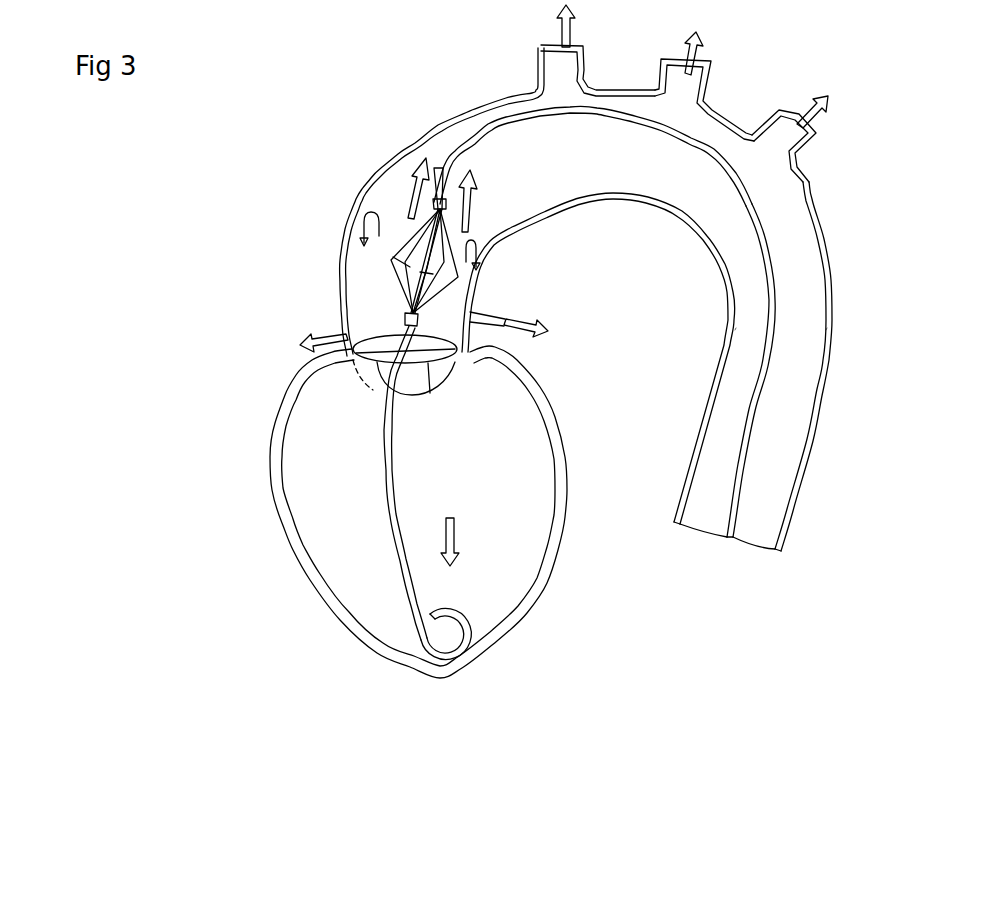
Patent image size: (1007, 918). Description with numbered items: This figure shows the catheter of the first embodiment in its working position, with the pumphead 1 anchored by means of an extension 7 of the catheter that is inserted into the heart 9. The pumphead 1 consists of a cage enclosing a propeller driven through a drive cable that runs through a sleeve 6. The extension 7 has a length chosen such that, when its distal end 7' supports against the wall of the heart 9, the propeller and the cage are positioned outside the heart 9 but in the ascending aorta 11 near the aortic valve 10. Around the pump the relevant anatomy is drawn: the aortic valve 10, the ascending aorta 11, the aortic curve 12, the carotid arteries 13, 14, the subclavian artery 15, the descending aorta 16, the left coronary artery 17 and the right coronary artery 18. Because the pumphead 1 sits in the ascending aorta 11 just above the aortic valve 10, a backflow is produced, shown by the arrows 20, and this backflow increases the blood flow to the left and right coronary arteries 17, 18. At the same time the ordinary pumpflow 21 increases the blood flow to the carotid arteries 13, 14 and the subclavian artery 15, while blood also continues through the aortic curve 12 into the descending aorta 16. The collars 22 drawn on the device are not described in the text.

The pumphead 1 is at (390, 240).
The sleeve 6 is at (775, 255).
The extension 7 is at (420, 483).
The distal end of the extension 7' is at (509, 634).
The heart 9 is at (552, 403).
The aortic valve 10 is at (408, 378).
The ascending aorta 11 is at (360, 290).
The aortic curve 12 is at (615, 180).
The carotid artery 13 is at (545, 63).
The carotid artery 14 is at (693, 77).
The subclavian artery 15 is at (787, 133).
The descending aorta 16 is at (802, 345).
The left coronary artery 17 is at (483, 318).
The right coronary artery 18 is at (302, 352).
The arrows 20 is at (368, 228).
The ordinary pumpflow 21 is at (421, 183).
The filter collar 22 is at (443, 216).